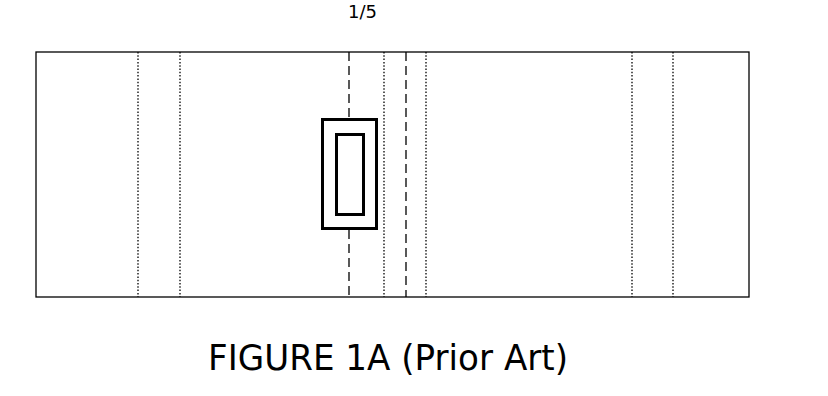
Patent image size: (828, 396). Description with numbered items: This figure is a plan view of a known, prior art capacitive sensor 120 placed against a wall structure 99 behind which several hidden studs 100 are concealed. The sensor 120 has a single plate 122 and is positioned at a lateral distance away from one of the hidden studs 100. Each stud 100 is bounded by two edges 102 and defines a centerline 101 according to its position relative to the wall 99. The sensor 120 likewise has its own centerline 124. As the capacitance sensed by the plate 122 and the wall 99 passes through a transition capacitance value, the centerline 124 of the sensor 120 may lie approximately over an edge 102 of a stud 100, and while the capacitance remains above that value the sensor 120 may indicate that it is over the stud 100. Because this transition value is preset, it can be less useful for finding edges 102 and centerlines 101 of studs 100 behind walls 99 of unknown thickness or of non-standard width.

The wall structure 99 is at (528, 67).
The hidden stud 100 is at (158, 66).
The centerline 101 is at (406, 297).
The edge 102 is at (138, 105).
The capacitive sensor 120 is at (329, 118).
The single plate 122 is at (348, 195).
The centerline of the sensor 124 is at (349, 297).